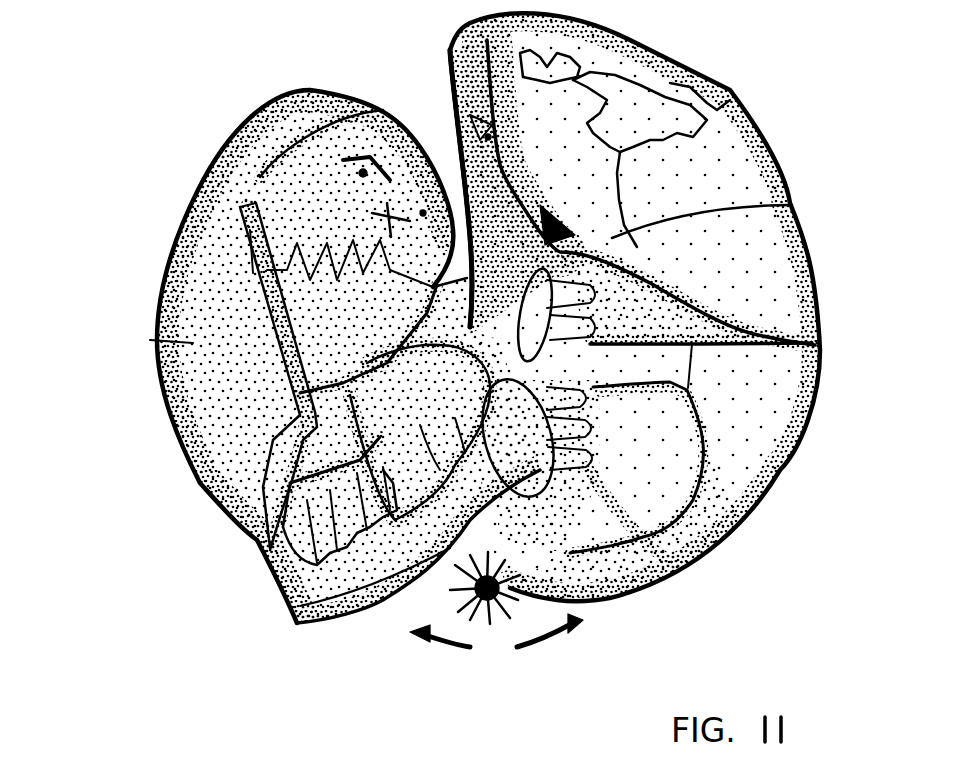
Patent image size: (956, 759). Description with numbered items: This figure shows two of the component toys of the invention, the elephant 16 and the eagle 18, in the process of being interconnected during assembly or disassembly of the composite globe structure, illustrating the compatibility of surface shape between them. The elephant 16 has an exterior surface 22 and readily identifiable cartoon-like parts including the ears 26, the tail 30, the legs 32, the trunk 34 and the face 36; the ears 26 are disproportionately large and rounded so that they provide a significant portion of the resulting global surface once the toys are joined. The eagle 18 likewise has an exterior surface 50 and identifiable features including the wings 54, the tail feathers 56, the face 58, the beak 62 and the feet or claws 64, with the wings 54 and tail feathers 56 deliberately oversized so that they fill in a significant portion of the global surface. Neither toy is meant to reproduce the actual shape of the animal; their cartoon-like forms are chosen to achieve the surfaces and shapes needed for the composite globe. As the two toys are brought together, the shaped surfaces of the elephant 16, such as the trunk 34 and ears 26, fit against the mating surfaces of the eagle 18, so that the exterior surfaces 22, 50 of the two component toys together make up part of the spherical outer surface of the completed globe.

The elephant 16 is at (737, 396).
The eagle 18 is at (157, 343).
The exterior surface 22 is at (822, 344).
The ears 26 is at (792, 205).
The tail 30 is at (580, 580).
The legs 32 is at (587, 467).
The trunk 34 is at (400, 185).
The face 36 is at (470, 215).
The exterior surface 50 is at (163, 393).
The wings 54 is at (273, 447).
The tail feathers 56 is at (337, 583).
The face 58 is at (420, 147).
The beak 62 is at (417, 230).
The feet or claws 64 is at (270, 545).